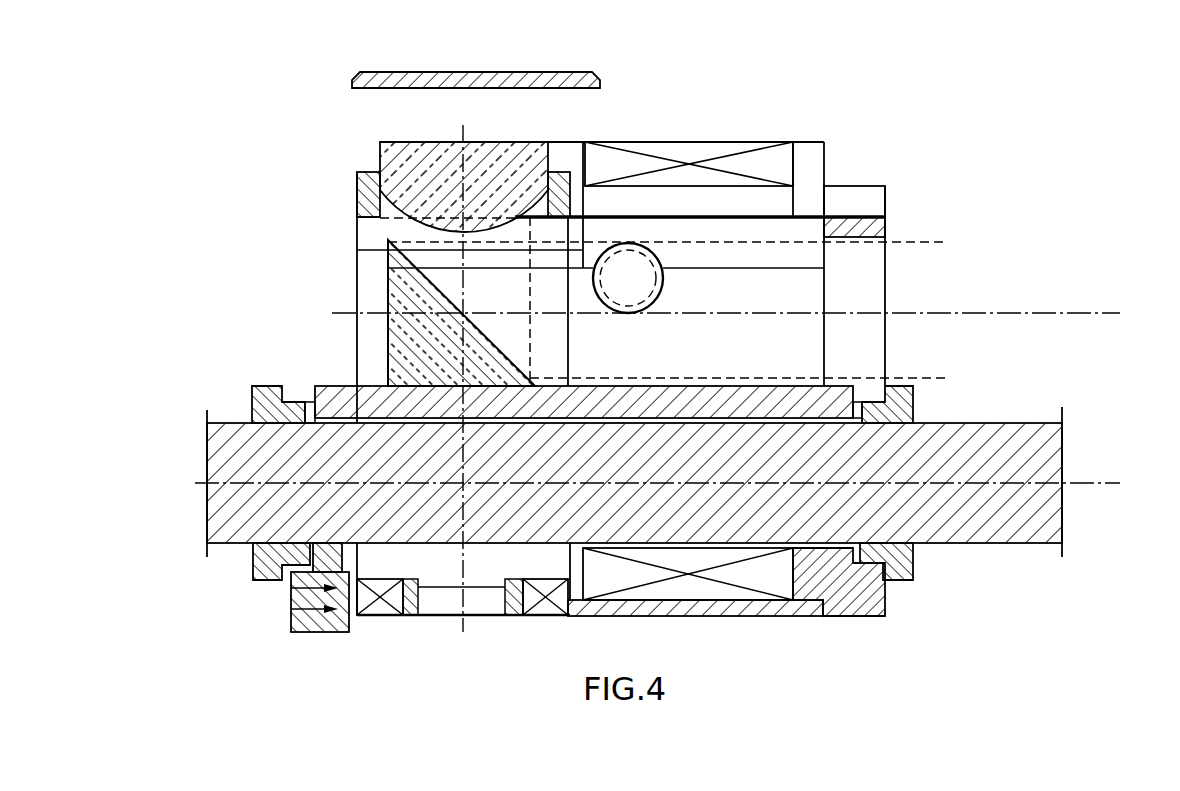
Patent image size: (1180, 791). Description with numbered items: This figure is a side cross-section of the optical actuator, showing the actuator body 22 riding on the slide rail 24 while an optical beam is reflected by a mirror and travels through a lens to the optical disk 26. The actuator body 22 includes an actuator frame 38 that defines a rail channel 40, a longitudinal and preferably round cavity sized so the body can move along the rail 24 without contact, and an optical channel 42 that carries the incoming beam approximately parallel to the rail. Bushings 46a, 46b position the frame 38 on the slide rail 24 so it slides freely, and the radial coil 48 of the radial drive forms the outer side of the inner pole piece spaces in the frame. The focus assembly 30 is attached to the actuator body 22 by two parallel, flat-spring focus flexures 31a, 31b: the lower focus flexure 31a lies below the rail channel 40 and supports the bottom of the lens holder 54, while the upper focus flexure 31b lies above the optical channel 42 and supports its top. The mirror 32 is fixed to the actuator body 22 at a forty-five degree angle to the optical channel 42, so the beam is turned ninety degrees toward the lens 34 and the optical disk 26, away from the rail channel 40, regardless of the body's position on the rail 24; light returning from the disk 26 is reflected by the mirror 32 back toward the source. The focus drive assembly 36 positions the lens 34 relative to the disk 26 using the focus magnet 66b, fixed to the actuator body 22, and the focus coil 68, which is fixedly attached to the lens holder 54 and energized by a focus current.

The actuator body 22 is at (812, 148).
The slide rail 24 is at (1036, 545).
The optical disk 26 is at (515, 83).
The focus assembly 30 is at (323, 341).
The lower focus flexure 31a is at (799, 618).
The upper focus flexure 31b is at (860, 198).
The mirror 32 is at (440, 293).
The lens 34 is at (445, 185).
The focus drive assembly 36 is at (331, 655).
The actuator frame 38 is at (325, 392).
The rail channel 40 is at (141, 483).
The optical channel 42 is at (920, 313).
The bushing 46a is at (258, 566).
The bushing 46b is at (913, 562).
The radial coil 48 is at (683, 160).
The lens holder 54 is at (358, 196).
The second focus magnet 66b is at (298, 623).
The focus coil 68 is at (547, 605).